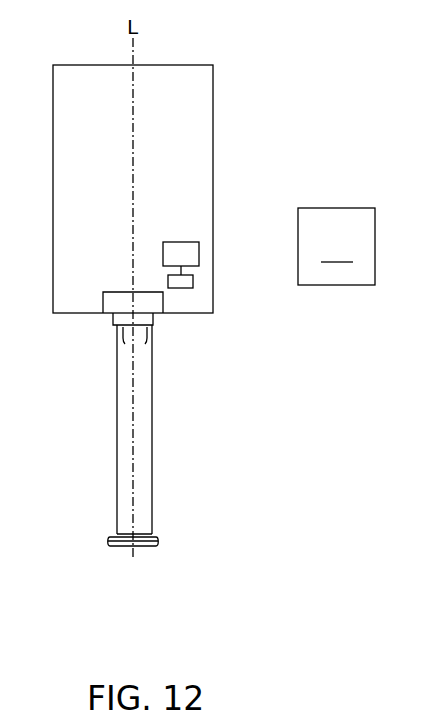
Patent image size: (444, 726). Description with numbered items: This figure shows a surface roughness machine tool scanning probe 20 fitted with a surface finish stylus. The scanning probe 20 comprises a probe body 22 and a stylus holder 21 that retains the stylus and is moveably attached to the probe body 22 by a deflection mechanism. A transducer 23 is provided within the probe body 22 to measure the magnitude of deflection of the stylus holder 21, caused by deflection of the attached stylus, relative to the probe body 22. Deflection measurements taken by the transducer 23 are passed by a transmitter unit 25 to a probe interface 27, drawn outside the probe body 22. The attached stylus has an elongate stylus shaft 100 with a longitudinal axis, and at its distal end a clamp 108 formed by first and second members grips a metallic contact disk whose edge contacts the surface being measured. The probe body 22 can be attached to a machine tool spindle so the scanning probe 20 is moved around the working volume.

The scanning probe 20 is at (329, 121).
The probe body 22 is at (214, 148).
The stylus holder 21 is at (164, 305).
The transducer 23 is at (168, 281).
The transmitter unit 25 is at (174, 242).
The probe interface 27 is at (180, 255).
The stylus shaft 100 is at (124, 407).
The clamp 108 is at (108, 557).